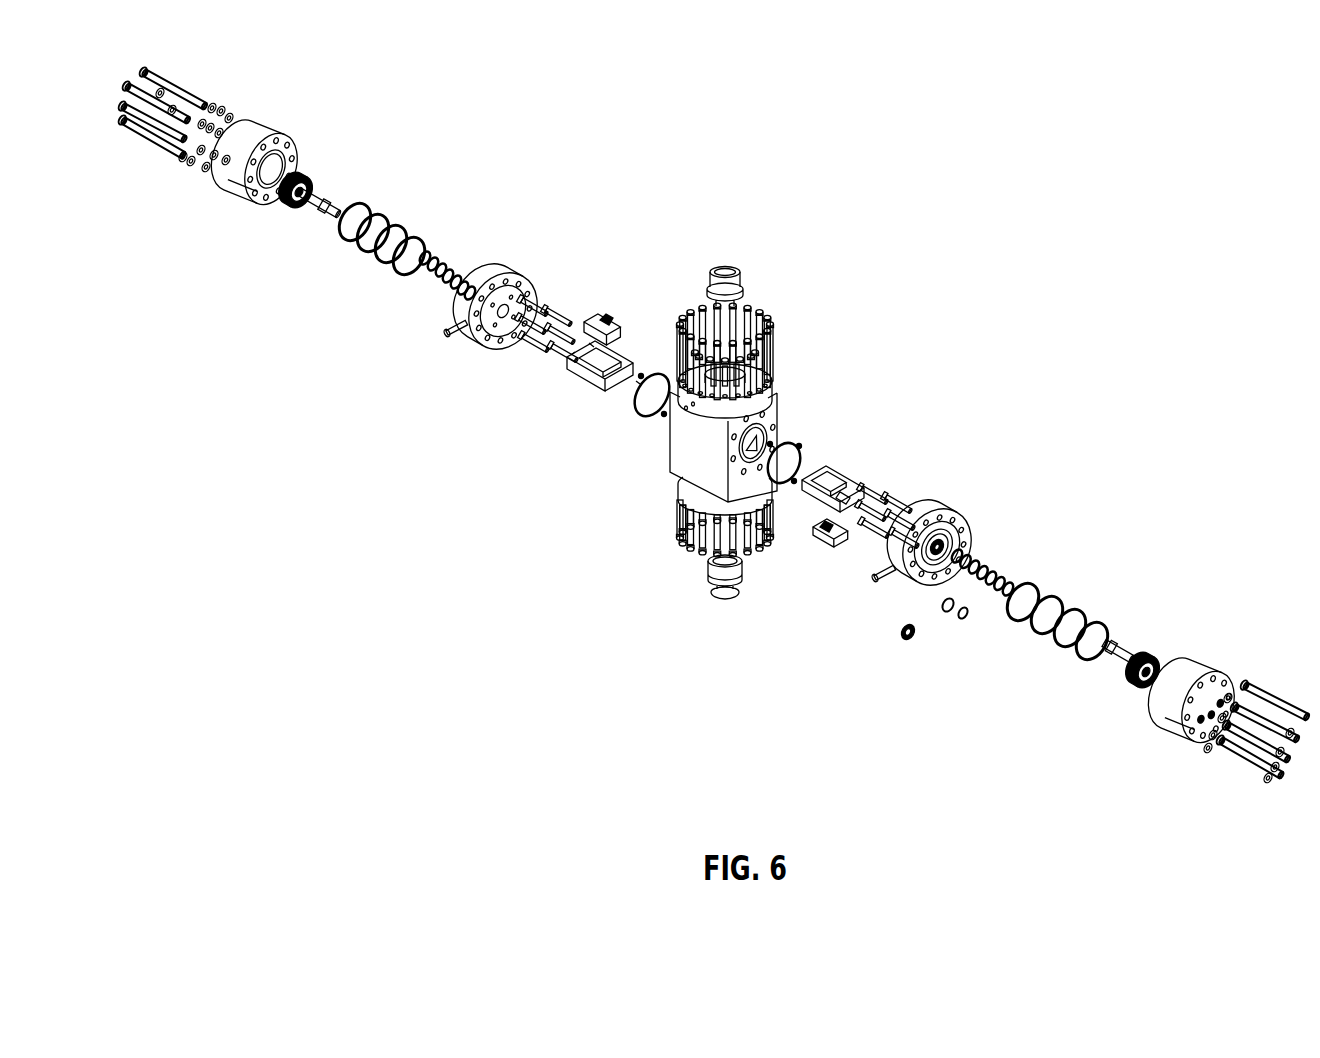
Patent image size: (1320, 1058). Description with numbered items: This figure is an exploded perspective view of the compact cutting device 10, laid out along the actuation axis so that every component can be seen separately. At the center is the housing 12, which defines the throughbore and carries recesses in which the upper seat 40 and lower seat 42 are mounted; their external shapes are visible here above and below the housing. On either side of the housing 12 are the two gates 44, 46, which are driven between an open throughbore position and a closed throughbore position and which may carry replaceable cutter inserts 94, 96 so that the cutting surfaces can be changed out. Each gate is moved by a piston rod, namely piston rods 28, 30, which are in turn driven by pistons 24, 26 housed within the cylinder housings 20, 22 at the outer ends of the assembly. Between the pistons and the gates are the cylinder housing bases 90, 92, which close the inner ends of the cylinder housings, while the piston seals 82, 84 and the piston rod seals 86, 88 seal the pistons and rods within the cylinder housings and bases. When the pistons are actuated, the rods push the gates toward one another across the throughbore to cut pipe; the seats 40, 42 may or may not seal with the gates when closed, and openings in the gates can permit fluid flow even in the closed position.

The compact cutting device 10 is at (932, 214).
The housing 12 is at (780, 405).
The cylinder housing 20 is at (1208, 668).
The cylinder housing 22 is at (263, 142).
The piston 24 is at (1158, 658).
The piston 26 is at (319, 186).
The piston rod 28 is at (1118, 660).
The piston rod 30 is at (303, 213).
The upper seat 40 is at (742, 273).
The lower seat 42 is at (708, 569).
The gate 44 is at (849, 484).
The gate 46 is at (588, 380).
The piston seal 82 is at (1089, 611).
The piston seal 84 is at (415, 234).
The piston rod seal 86 is at (991, 569).
The piston rod seal 88 is at (449, 268).
The cylinder housing base 90 is at (909, 581).
The cylinder housing base 92 is at (479, 340).
The cutter insert 94 is at (824, 548).
The cutter insert 96 is at (612, 316).